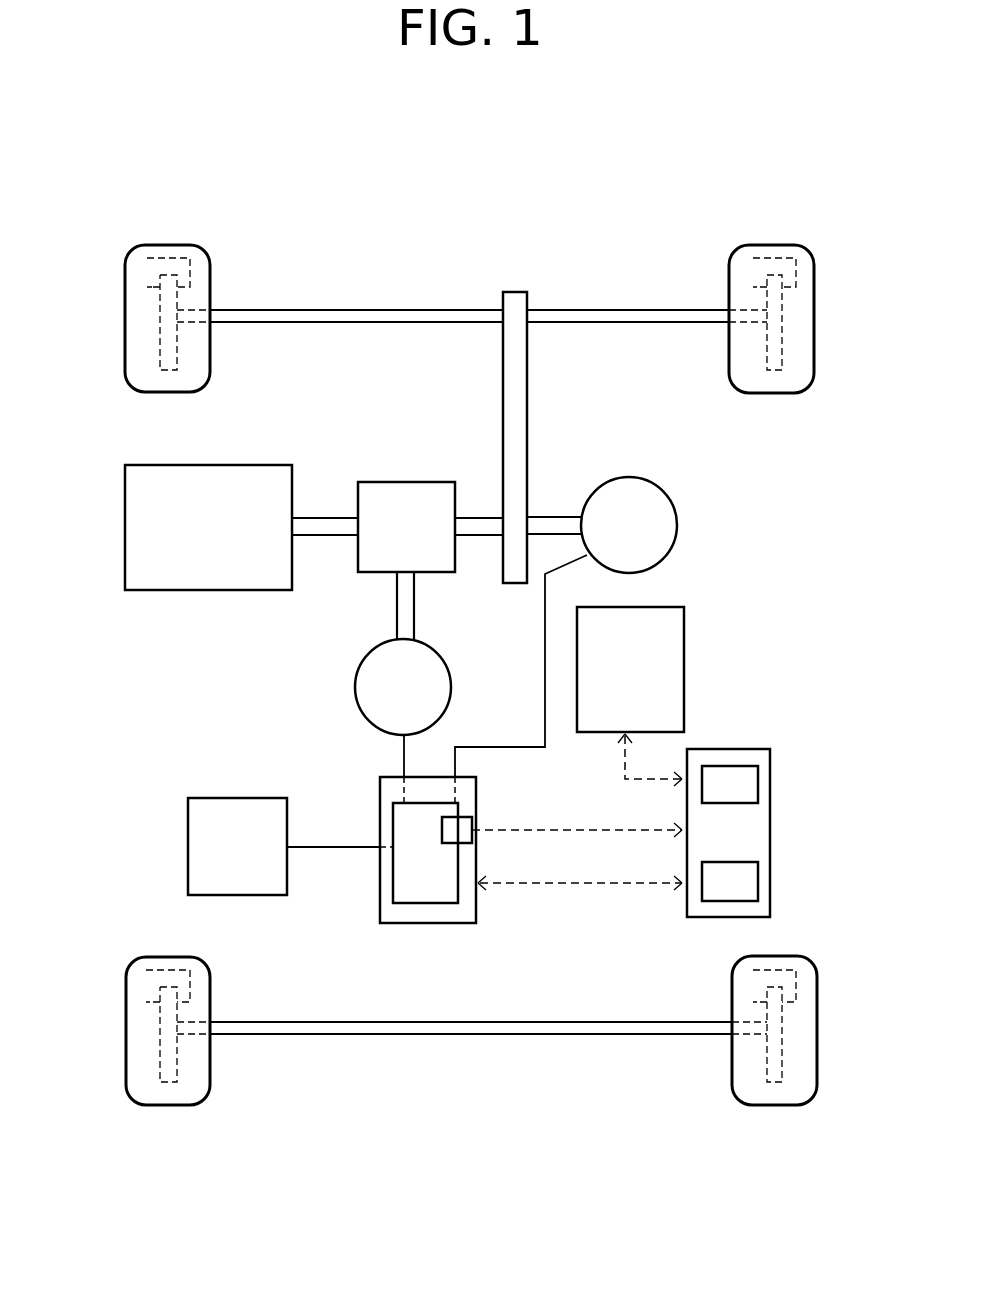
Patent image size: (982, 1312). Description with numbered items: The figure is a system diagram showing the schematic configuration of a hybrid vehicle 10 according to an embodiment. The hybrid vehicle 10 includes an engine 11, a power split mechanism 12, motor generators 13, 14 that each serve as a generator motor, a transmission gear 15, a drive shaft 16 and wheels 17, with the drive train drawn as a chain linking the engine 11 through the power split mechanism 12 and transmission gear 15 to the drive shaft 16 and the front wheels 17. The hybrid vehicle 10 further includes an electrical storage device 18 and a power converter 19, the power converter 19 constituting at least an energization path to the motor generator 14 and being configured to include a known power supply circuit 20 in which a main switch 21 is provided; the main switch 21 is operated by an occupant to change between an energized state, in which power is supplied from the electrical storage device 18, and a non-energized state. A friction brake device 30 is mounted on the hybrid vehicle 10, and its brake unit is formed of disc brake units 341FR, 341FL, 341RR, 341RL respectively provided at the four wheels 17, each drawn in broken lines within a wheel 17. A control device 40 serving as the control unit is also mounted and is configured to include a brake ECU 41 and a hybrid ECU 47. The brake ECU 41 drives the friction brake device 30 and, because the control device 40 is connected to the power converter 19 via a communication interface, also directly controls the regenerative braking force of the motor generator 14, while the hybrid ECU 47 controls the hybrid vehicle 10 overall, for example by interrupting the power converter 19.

The hybrid vehicle 10 is at (106, 175).
The engine 11 is at (125, 512).
The power split mechanism 12 is at (379, 482).
The motor generator 13 is at (452, 684).
The motor generator 14 is at (678, 525).
The transmission gear 15 is at (503, 403).
The drive shaft 16 is at (381, 310).
The wheel 17 is at (125, 316).
The electrical storage device 18 is at (205, 798).
The power converter 19 is at (380, 797).
The power supply circuit 20 is at (393, 885).
The main switch 21 is at (460, 817).
The friction brake device 30 is at (685, 663).
The control device 40 is at (771, 845).
The brake ECU 41 is at (745, 803).
The hybrid ECU 47 is at (710, 862).
The disc brake unit 341FL is at (170, 258).
The disc brake unit 341FR is at (770, 258).
The disc brake unit 341RL is at (163, 1085).
The disc brake unit 341RR is at (778, 1085).